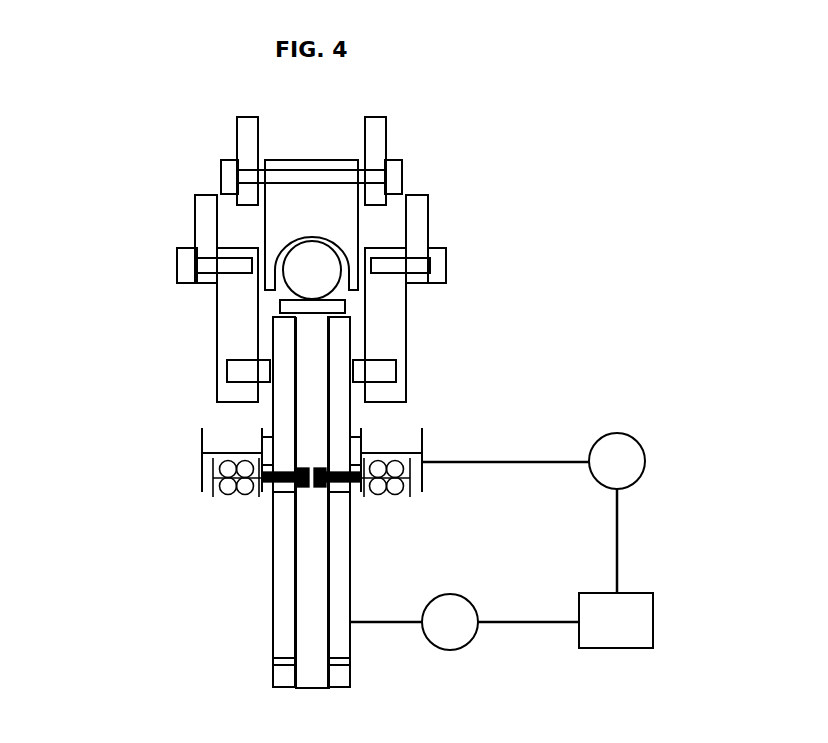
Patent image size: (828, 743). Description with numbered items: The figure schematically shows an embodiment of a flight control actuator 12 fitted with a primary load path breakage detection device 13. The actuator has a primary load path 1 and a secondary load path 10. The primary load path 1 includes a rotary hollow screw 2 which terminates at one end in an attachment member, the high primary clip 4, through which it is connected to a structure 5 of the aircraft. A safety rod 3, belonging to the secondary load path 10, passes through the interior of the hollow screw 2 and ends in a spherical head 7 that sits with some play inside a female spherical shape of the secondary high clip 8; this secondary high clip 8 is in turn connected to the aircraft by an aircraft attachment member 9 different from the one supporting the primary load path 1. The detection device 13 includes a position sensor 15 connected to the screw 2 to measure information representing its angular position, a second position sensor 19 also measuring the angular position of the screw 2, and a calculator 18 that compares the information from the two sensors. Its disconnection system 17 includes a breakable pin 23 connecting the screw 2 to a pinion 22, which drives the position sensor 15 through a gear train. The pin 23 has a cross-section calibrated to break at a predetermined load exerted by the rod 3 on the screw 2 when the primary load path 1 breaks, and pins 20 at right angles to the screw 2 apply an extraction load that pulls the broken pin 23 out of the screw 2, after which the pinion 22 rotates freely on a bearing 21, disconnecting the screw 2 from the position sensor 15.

The primary load path 1 is at (272, 602).
The rotary hollow screw 2 is at (338, 406).
The safety rod 3 is at (313, 541).
The high primary clip 4 is at (414, 338).
The structure 5 is at (441, 222).
The spherical head 7 is at (311, 281).
The secondary high clip 8 is at (311, 214).
The aircraft attachment member 9 is at (403, 141).
The secondary load path 10 is at (277, 514).
The flight control actuator 12 is at (99, 487).
The primary load path breakage detection device 13 is at (521, 406).
The position sensor 15 is at (645, 462).
The disconnection system 17 is at (401, 518).
The calculator 18 is at (653, 620).
The second position sensor 19 is at (450, 650).
The pins 20 is at (220, 506).
The bearing 21 is at (262, 437).
The pinion 22 is at (201, 438).
The breakable pin 23 is at (323, 489).